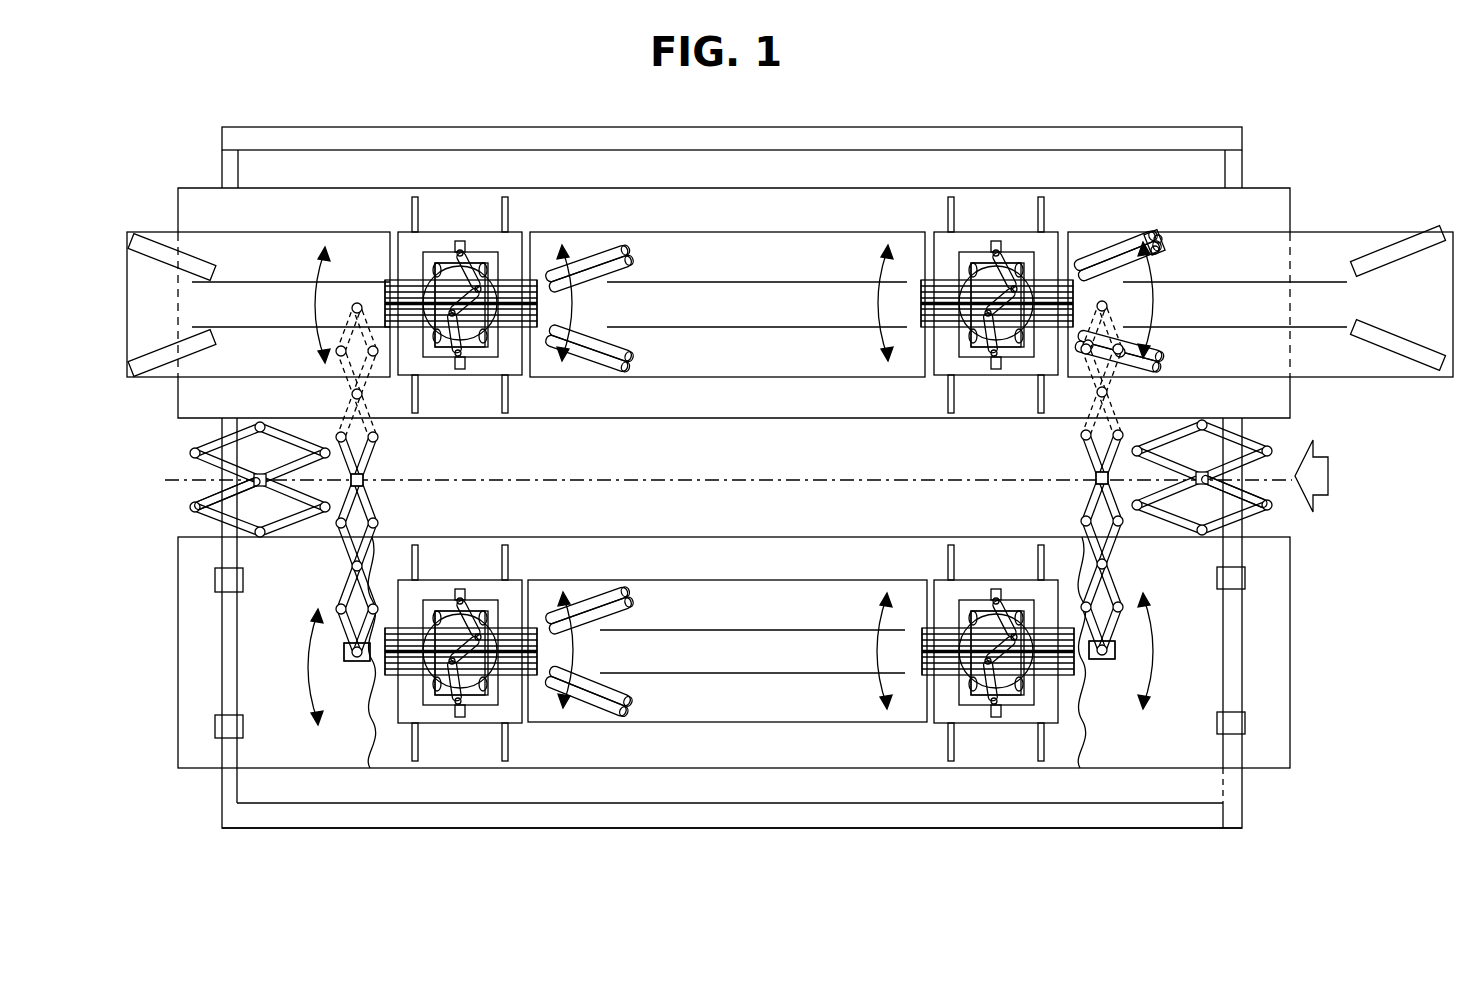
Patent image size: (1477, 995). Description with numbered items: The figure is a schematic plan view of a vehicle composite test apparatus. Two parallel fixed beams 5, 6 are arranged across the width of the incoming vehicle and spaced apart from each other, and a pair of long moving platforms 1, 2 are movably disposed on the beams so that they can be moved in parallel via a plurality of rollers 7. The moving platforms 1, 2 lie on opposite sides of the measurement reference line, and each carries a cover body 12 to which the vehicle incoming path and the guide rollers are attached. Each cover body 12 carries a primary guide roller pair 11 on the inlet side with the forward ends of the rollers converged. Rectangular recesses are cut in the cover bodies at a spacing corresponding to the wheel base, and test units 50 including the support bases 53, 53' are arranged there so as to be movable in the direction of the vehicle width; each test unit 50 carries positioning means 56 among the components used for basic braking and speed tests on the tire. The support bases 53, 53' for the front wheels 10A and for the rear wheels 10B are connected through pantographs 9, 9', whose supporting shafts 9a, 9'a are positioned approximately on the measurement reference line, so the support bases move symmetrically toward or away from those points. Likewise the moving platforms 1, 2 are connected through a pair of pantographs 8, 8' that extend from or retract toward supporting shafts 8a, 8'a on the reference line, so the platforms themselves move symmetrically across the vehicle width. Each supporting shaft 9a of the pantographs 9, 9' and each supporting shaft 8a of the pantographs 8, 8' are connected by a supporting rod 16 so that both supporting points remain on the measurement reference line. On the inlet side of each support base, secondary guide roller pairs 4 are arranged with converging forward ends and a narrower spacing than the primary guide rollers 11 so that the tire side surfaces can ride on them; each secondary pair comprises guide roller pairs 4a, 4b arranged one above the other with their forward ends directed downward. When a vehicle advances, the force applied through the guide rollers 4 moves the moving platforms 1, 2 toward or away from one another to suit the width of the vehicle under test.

The moving platform 1 is at (300, 257).
The moving platform 2 is at (632, 765).
The secondary guide roller pair 4 is at (608, 238).
The guide roller pair 4a is at (1152, 242).
The guide roller pair 4b is at (1156, 255).
The fixed beam 5 is at (1242, 800).
The fixed beam 6 is at (223, 162).
The roller 7 is at (215, 580).
The pantograph 8 is at (1230, 477).
The supporting shaft 8a is at (1243, 483).
The pantograph 8' is at (234, 479).
The supporting shaft 8'a is at (195, 503).
The pantograph 9 is at (1081, 480).
The supporting shaft 9a is at (1093, 472).
The pantograph 9' is at (333, 482).
The supporting shaft 9'a is at (385, 463).
The front wheel 10A is at (532, 270).
The rear wheel 10B is at (935, 270).
The primary guide roller pair 11 is at (152, 243).
The cover body 12 is at (1318, 245).
The supporting rod 16 is at (345, 520).
The test unit 50 is at (524, 222).
The support base 53 is at (728, 251).
The support base 53' is at (717, 675).
The positioning means 56 is at (480, 250).